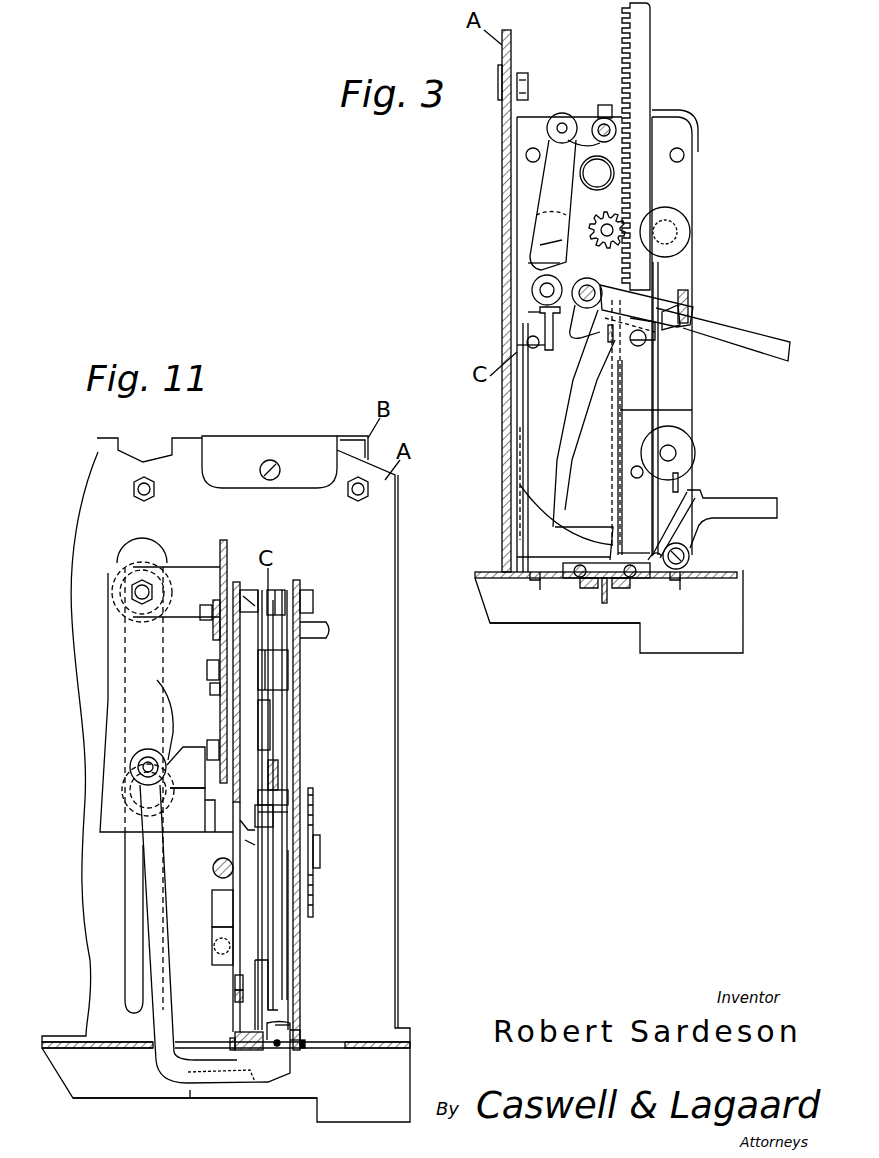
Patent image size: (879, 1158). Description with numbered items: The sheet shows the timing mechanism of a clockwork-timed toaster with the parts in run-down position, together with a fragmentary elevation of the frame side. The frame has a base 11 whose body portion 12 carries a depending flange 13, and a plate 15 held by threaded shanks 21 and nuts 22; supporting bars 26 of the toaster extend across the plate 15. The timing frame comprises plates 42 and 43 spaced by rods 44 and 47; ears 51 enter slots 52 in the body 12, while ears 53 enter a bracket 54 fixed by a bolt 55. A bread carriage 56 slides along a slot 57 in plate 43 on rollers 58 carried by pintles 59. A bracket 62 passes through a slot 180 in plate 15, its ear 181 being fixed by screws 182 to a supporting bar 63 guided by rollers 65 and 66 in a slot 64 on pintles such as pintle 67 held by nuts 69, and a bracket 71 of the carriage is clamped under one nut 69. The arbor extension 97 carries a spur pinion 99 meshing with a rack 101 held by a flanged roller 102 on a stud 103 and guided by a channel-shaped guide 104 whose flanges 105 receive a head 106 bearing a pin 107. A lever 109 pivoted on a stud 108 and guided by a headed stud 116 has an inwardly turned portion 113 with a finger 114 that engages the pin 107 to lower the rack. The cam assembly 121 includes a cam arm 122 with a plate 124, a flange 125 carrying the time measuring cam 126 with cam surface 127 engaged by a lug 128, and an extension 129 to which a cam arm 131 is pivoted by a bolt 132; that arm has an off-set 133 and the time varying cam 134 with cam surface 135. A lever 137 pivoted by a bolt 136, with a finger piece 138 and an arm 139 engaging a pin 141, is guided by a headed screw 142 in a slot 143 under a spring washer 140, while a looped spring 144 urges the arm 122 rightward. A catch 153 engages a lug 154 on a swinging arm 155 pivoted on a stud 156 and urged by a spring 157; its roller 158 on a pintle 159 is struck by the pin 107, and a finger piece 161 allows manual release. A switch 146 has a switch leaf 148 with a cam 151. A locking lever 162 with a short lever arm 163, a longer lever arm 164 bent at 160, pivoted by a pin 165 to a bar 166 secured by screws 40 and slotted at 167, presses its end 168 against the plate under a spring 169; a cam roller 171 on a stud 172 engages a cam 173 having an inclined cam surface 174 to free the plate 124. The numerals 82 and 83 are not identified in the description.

In FIG. 3, the base 11 is at (485, 590).
In FIG. 11, the base 11 is at (70, 1098).
In FIG. 3, the body portion 12 is at (500, 604).
In FIG. 11, the body portion 12 is at (60, 1058).
In FIG. 3, the flange 13 is at (512, 626).
In FIG. 11, the flange 13 is at (100, 1100).
In FIG. 3, the plate 15 is at (502, 132).
In FIG. 11, the plate 15 is at (85, 504).
In FIG. 11, the threaded reduced shank 21 is at (132, 487).
In FIG. 11, the nut 22 is at (150, 486).
In FIG. 11, the supporting bar 26 is at (202, 436).
In FIG. 3, the screw 40 is at (580, 580).
In FIG. 11, the screw 40 is at (305, 1050).
In FIG. 3, the plate 42 is at (695, 136).
In FIG. 11, the plate 42 is at (298, 582).
In FIG. 11, the plate 43 is at (237, 582).
In FIG. 3, the rod 44 is at (526, 158).
In FIG. 11, the rod 44 is at (318, 627).
In FIG. 3, the rod 47 is at (612, 126).
In FIG. 3, the ear 51 is at (540, 592).
In FIG. 3, the slot 52 is at (532, 580).
In FIG. 3, the ear 53 is at (604, 105).
In FIG. 3, the bracket 54 is at (692, 125).
In FIG. 3, the bolt 55 is at (528, 85).
In FIG. 11, the bread carriage 56 is at (227, 545).
In FIG. 11, the slot 57 is at (268, 632).
In FIG. 11, the roller 58 is at (250, 614).
In FIG. 11, the pintle 59 is at (200, 711).
In FIG. 11, the bracket 62 is at (262, 832).
In FIG. 11, the supporting bar 63 is at (108, 622).
In FIG. 11, the slot 64 is at (142, 542).
In FIG. 11, the roller 65 is at (128, 575).
In FIG. 11, the roller 66 is at (122, 796).
In FIG. 11, the pintle 67 is at (135, 592).
In FIG. 11, the nut 69 is at (150, 584).
In FIG. 11, the bracket 71 is at (192, 575).
In FIG. 11, the segment 82 is at (321, 850).
In FIG. 11, the rack 83 is at (314, 880).
In FIG. 3, the extension 97 is at (600, 226).
In FIG. 3, the spur pinion 99 is at (597, 173).
In FIG. 11, the spur pinion 99 is at (290, 682).
In FIG. 3, the rack 101 is at (645, 35).
In FIG. 3, the flanged roller 102 is at (678, 234).
In FIG. 3, the stud 103 is at (672, 228).
In FIG. 3, the channel-shaped guide 104 is at (692, 406).
In FIG. 3, the flange 105 is at (658, 395).
In FIG. 3, the head 106 is at (637, 457).
In FIG. 3, the pin 107 is at (659, 358).
In FIG. 11, the stud 108 is at (205, 612).
In FIG. 11, the lever 109 is at (213, 640).
In FIG. 3, the inwardly turned portion 113 is at (690, 310).
In FIG. 3, the finger 114 is at (688, 295).
In FIG. 11, the headed stud 116 is at (212, 702).
In FIG. 3, the cam assembly 121 is at (528, 320).
In FIG. 3, the cam arm 122 is at (528, 395).
In FIG. 11, the cam arm 122 is at (293, 930).
In FIG. 3, the plate 124 is at (603, 530).
In FIG. 11, the plate 124 is at (292, 1015).
In FIG. 3, the flange 125 is at (517, 458).
In FIG. 11, the flange 125 is at (280, 960).
In FIG. 3, the time measuring cam 126 is at (528, 512).
In FIG. 11, the time measuring cam 126 is at (235, 980).
In FIG. 3, the cam surface 127 is at (530, 498).
In FIG. 11, the cam surface 127 is at (235, 996).
In FIG. 3, the lug 128 is at (605, 345).
In FIG. 3, the extension 129 is at (540, 218).
In FIG. 3, the cam arm 131 is at (548, 185).
In FIG. 11, the cam arm 131 is at (289, 650).
In FIG. 3, the bolt 132 is at (562, 122).
In FIG. 11, the bolt 132 is at (313, 600).
In FIG. 3, the off-set 133 is at (528, 263).
In FIG. 11, the off-set 133 is at (290, 722).
In FIG. 3, the time varying cam 134 is at (578, 408).
In FIG. 11, the time varying cam 134 is at (290, 910).
In FIG. 3, the cam surface 135 is at (578, 438).
In FIG. 3, the bolt 136 is at (532, 290).
In FIG. 3, the lever 137 is at (655, 305).
In FIG. 11, the lever 137 is at (275, 793).
In FIG. 3, the finger piece 138 is at (765, 342).
In FIG. 3, the arm 139 is at (517, 346).
In FIG. 11, the arm 139 is at (300, 808).
In FIG. 3, the spring washer 140 is at (588, 279).
In FIG. 3, the pin 141 is at (527, 343).
In FIG. 11, the pin 141 is at (275, 814).
In FIG. 3, the headed screw 142 is at (540, 310).
In FIG. 11, the headed screw 142 is at (198, 827).
In FIG. 3, the slot 143 is at (588, 329).
In FIG. 11, the slot 143 is at (282, 768).
In FIG. 3, the looped spring 144 is at (585, 143).
In FIG. 11, the switch 146 is at (212, 910).
In FIG. 11, the switch leaf 148 is at (215, 873).
In FIG. 11, the cam 151 is at (212, 945).
In FIG. 3, the catch 153 is at (660, 338).
In FIG. 3, the lug 154 is at (679, 480).
In FIG. 3, the swinging arm 155 is at (690, 490).
In FIG. 3, the stud 156 is at (690, 560).
In FIG. 3, the spring 157 is at (688, 548).
In FIG. 3, the roller 158 is at (694, 452).
In FIG. 3, the pintle 159 is at (672, 448).
In FIG. 11, the bend 160 is at (165, 1072).
In FIG. 3, the finger piece 161 is at (765, 503).
In FIG. 3, the locking lever 162 is at (605, 605).
In FIG. 11, the locking lever 162 is at (240, 1085).
In FIG. 11, the short lever arm 163 is at (283, 990).
In FIG. 11, the longer lever arm 164 is at (155, 905).
In FIG. 11, the pin 165 is at (278, 1048).
In FIG. 3, the bar 166 is at (586, 592).
In FIG. 11, the bar 166 is at (240, 1036).
In FIG. 11, the slot 167 is at (300, 1040).
In FIG. 11, the end 168 is at (300, 1030).
In FIG. 3, the spring 169 is at (632, 590).
In FIG. 11, the spring 169 is at (215, 1075).
In FIG. 11, the cam roller 171 is at (146, 749).
In FIG. 11, the stud 172 is at (140, 760).
In FIG. 11, the cam 173 is at (186, 811).
In FIG. 11, the inclined cam surface 174 is at (157, 690).
In FIG. 11, the slot 180 is at (250, 870).
In FIG. 11, the ear 181 is at (191, 780).
In FIG. 11, the screw 182 is at (271, 848).